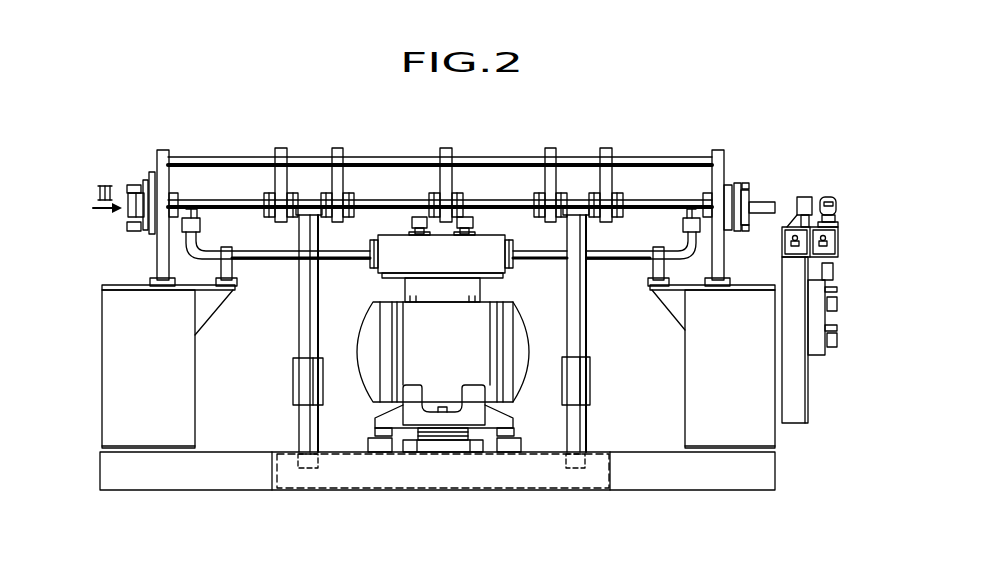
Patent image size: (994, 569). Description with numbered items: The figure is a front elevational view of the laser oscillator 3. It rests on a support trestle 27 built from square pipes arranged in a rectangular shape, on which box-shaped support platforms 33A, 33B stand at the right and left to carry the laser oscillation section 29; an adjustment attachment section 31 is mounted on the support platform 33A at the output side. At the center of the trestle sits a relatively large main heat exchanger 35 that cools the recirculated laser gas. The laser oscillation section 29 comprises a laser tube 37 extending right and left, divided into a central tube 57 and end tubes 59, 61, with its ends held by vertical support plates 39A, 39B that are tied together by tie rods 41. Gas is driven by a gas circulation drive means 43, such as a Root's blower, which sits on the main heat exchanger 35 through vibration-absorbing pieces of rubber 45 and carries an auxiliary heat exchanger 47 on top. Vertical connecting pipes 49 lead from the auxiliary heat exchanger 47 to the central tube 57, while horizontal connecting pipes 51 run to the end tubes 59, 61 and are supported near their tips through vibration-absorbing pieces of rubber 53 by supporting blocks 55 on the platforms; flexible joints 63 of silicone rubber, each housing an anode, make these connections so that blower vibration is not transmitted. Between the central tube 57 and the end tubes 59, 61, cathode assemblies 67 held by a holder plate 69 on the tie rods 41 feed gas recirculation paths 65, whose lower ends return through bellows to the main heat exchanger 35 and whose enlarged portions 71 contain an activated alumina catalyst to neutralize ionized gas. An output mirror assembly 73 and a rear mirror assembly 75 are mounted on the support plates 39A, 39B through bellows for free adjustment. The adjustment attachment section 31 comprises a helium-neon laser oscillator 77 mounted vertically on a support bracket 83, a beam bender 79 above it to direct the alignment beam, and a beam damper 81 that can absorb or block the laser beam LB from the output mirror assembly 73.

The laser oscillator 3 is at (650, 145).
The support trestle 27 is at (646, 498).
The laser oscillation section 29 is at (148, 259).
The adjustment attachment section 31 is at (846, 240).
The support platform 33A is at (752, 397).
The support platform 33B is at (168, 396).
The main heat exchanger 35 is at (457, 488).
The laser tube 37 is at (509, 194).
The support plate 39A is at (718, 150).
The support plate 39B is at (164, 150).
The tie rods 41 is at (243, 157).
The gas circulation drive means 43 is at (448, 353).
The vibration-absorbing pieces of rubber 45 is at (378, 433).
The auxiliary heat exchanger 47 is at (396, 275).
The connecting pipes 49 is at (460, 236).
The connecting pipes 51 is at (258, 260).
The vibration-absorbing pieces of rubber 53 is at (226, 300).
The supporting blocks 55 is at (233, 288).
The central tube 57 is at (379, 200).
The end tube 59 is at (672, 200).
The end tube 61 is at (212, 200).
The flexible joints 63 is at (201, 226).
The gas recirculation paths 65 is at (308, 308).
The cathode assemblies 67 is at (327, 188).
The holder plate 69 is at (280, 148).
The enlarged portion 71 is at (294, 383).
The output mirror assembly 73 is at (745, 184).
The rear mirror assembly 75 is at (131, 183).
The helium-neon laser oscillator 77 is at (840, 307).
The beam bender 79 is at (829, 190).
The beam damper 81 is at (804, 190).
The support bracket 83 is at (800, 410).
The laser beam LB is at (792, 208).